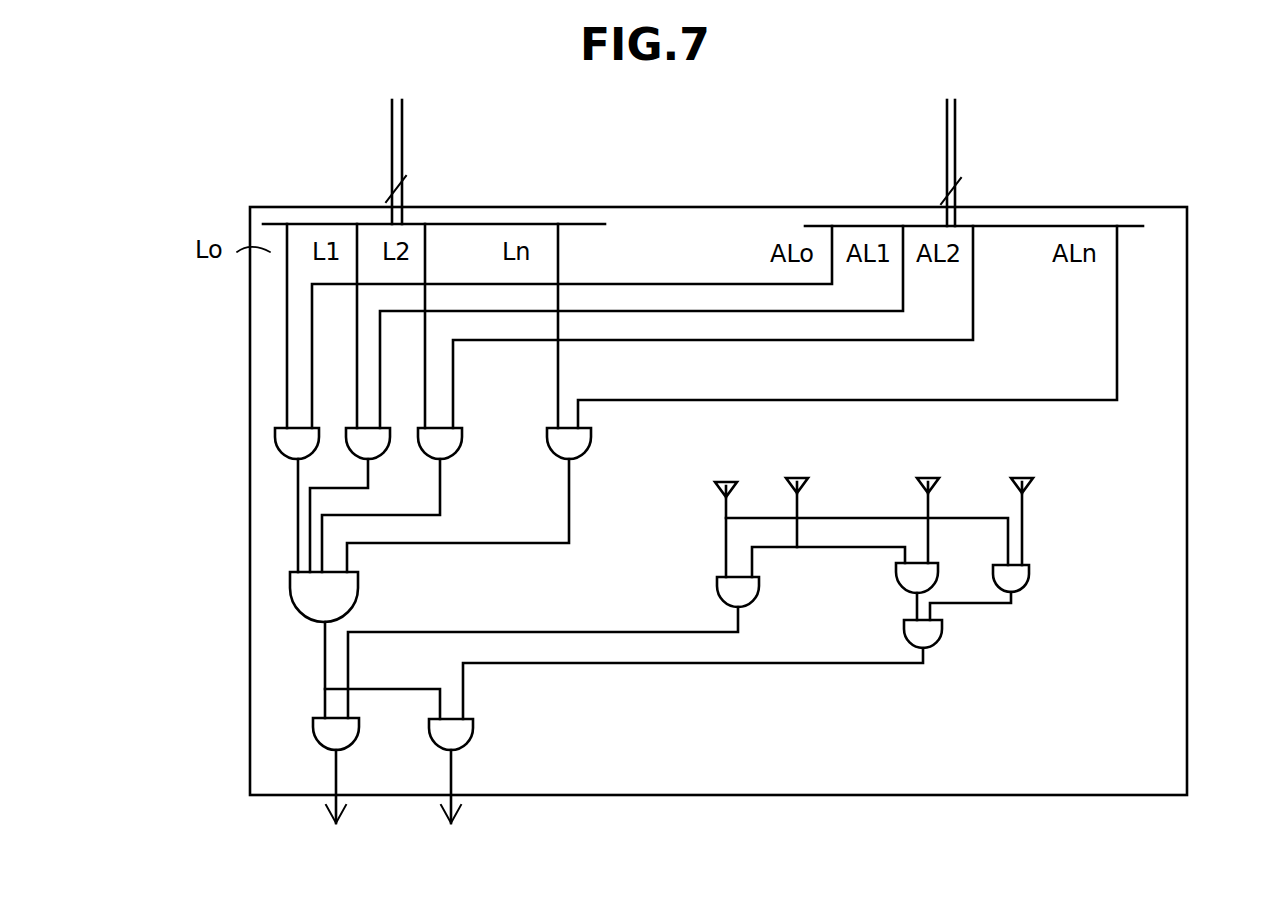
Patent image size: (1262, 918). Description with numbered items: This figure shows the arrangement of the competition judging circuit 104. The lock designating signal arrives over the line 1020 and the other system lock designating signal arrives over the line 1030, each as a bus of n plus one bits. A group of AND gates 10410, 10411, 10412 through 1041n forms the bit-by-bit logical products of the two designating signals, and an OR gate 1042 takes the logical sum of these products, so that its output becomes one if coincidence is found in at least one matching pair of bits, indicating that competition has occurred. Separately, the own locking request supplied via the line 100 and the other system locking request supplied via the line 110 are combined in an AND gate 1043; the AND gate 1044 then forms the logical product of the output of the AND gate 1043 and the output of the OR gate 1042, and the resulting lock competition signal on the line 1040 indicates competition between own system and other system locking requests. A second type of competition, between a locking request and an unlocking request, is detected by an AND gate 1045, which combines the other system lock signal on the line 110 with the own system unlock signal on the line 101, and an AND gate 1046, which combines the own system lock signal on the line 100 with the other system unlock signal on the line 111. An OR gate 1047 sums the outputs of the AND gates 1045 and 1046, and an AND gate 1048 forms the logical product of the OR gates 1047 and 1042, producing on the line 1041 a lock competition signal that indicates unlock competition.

The competition judging circuit 104 is at (1188, 312).
The line 1020 is at (404, 150).
The line 1030 is at (957, 157).
The AND gate 10410 is at (276, 447).
The AND gate 10411 is at (350, 448).
The AND gate 10412 is at (458, 452).
The AND gate 1041n is at (566, 462).
The OR gate 1042 is at (358, 594).
The line 100 is at (716, 504).
The line 110 is at (800, 512).
The line 101 is at (930, 510).
The line 111 is at (1024, 508).
The AND gate 1043 is at (757, 590).
The AND gate 1045 is at (922, 594).
The AND gate 1046 is at (1030, 578).
The OR gate 1047 is at (940, 642).
The AND gate 1044 is at (368, 779).
The AND gate 1048 is at (496, 779).
The line 1040 is at (342, 802).
The line 1041 is at (456, 806).